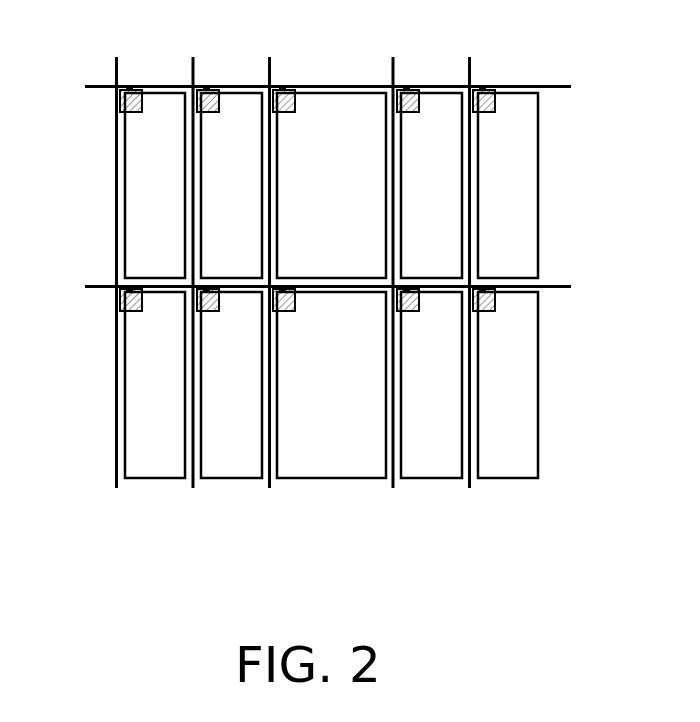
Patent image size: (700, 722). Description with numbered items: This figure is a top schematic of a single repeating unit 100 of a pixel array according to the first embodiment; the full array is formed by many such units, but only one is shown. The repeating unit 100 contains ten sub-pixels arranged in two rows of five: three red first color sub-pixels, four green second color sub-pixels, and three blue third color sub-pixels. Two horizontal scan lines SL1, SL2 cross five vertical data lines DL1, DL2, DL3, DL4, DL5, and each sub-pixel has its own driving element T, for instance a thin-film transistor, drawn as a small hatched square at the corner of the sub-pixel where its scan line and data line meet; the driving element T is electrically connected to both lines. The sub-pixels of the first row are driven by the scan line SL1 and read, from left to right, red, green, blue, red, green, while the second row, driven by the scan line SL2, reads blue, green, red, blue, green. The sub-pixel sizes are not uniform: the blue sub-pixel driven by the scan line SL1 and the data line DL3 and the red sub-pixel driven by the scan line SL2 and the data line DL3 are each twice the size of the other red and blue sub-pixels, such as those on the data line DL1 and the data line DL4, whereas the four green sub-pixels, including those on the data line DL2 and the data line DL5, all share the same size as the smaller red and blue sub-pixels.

The repeating unit 100 is at (656, 542).
The data line DL1 is at (116, 254).
The data line DL2 is at (193, 254).
The data line DL3 is at (270, 254).
The data line DL4 is at (393, 254).
The data line DL5 is at (471, 254).
The scan line SL1 is at (304, 85).
The scan line SL2 is at (304, 286).
The driving element T is at (118, 96).